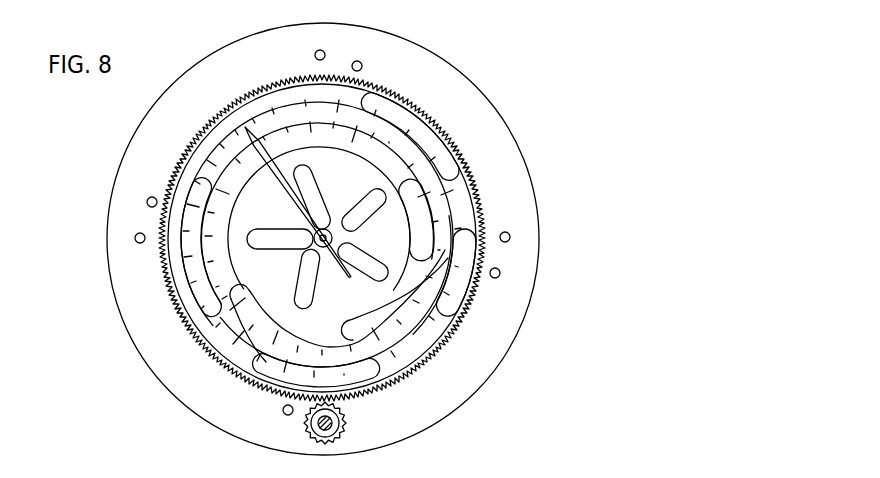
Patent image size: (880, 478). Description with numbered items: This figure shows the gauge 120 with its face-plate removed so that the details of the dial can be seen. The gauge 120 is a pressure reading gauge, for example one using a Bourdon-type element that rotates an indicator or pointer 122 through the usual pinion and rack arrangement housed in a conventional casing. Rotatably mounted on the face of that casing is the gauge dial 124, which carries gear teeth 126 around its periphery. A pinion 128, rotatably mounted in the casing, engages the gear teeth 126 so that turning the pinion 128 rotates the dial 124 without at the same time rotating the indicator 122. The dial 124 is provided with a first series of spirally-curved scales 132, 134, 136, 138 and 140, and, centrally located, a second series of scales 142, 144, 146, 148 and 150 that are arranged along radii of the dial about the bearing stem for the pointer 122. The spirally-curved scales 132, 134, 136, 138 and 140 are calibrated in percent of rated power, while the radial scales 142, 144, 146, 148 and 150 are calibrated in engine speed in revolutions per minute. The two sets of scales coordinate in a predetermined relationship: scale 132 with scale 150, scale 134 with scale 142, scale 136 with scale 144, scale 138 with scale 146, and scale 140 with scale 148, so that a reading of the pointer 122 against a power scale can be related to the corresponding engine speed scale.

The gauge 120 is at (510, 132).
The indicator or pointer 122 is at (272, 163).
The gauge dial 124 is at (362, 310).
The gear teeth 126 is at (340, 238).
The pinion 128 is at (346, 417).
The spirally-curved scale 132 is at (289, 107).
The spirally-curved scale 134 is at (393, 120).
The spirally-curved scale 136 is at (458, 288).
The spirally-curved scale 138 is at (262, 362).
The spirally-curved scale 140 is at (185, 275).
The radial speed scale 142 is at (315, 182).
The radial speed scale 144 is at (363, 222).
The radial speed scale 146 is at (362, 248).
The radial speed scale 148 is at (303, 277).
The radial speed scale 150 is at (290, 220).